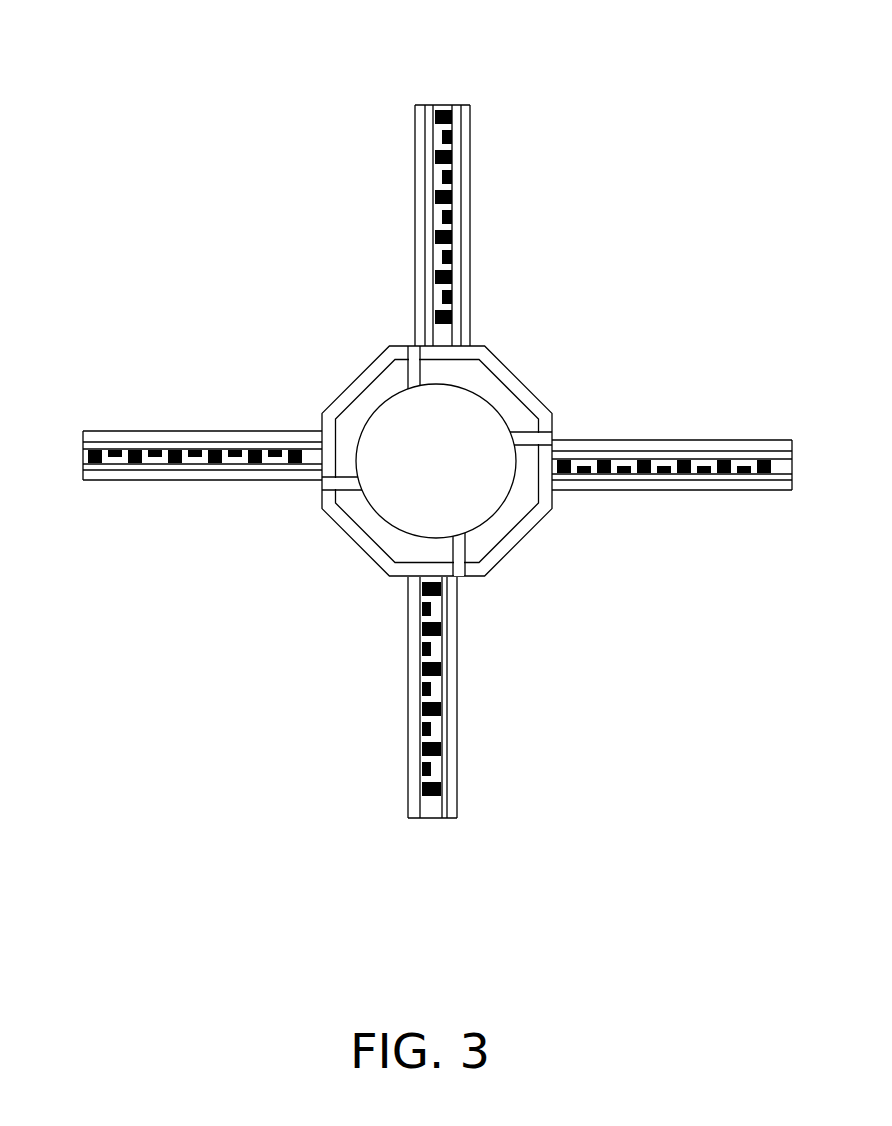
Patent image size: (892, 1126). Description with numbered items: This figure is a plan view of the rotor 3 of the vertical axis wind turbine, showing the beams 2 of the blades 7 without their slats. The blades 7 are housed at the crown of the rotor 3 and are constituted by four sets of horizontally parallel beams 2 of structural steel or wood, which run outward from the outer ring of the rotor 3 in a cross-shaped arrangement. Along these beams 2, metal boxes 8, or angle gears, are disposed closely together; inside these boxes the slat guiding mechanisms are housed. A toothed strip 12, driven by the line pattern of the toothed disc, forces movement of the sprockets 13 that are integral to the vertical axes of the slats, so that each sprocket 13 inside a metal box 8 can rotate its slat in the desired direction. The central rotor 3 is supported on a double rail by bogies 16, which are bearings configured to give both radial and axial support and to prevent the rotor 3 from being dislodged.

The beams 2 is at (452, 108).
The rotor 3 is at (505, 370).
The blades 7 is at (423, 600).
The metal boxes 8 is at (445, 760).
The toothed strip 12 is at (678, 460).
The sprockets 13 is at (438, 740).
The bogies 16 is at (533, 440).